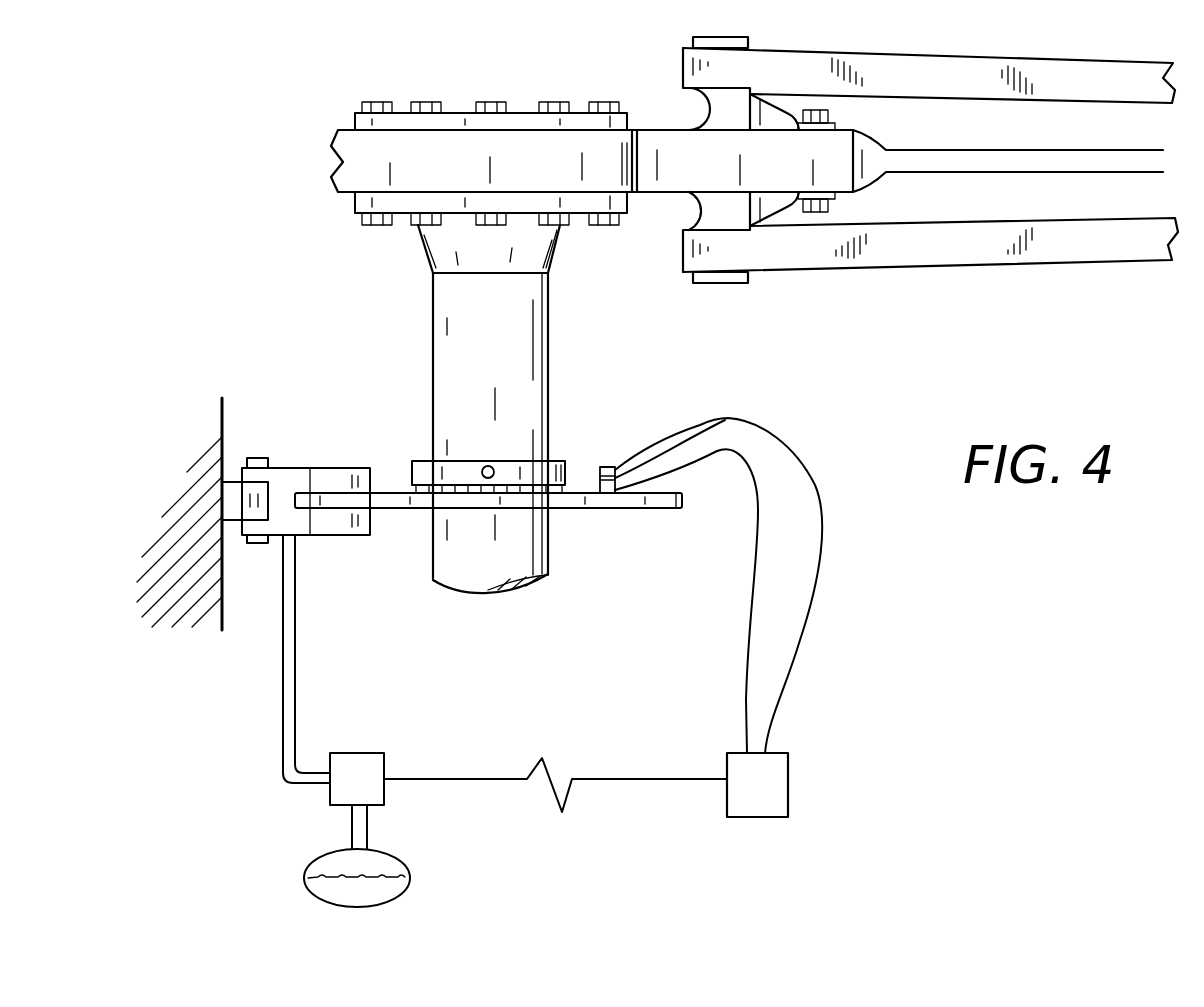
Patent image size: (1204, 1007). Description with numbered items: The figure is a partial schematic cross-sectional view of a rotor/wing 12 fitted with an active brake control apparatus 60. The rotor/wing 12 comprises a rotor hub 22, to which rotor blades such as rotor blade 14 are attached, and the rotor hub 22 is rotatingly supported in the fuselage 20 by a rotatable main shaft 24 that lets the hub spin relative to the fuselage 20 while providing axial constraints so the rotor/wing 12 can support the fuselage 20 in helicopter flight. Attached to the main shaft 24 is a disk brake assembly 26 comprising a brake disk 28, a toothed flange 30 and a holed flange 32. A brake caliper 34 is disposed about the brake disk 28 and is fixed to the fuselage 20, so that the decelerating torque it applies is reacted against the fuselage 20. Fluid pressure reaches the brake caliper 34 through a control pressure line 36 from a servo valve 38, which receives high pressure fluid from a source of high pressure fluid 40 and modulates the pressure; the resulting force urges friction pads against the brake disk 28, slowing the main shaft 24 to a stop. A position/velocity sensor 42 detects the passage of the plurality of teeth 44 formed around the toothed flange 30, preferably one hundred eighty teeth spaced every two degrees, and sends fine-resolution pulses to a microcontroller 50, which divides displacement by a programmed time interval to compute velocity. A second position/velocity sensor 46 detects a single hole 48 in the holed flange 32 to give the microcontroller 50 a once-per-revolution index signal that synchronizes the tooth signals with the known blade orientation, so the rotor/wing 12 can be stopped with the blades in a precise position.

The rotor/wing 12 is at (302, 59).
The rotor blade 14 is at (858, 258).
The fuselage 20 is at (148, 597).
The rotor hub 22 is at (357, 208).
The main shaft 24 is at (452, 348).
The disk brake assembly 26 is at (575, 637).
The brake disk 28 is at (684, 507).
The toothed flange 30 is at (605, 466).
The holed flange 32 is at (566, 478).
The brake caliper 34 is at (303, 465).
The control pressure line 36 is at (293, 657).
The servo valve 38 is at (385, 763).
The source of high pressure fluid 40 is at (412, 877).
The position/velocity sensor 42 is at (706, 423).
The plurality of teeth 44 is at (410, 490).
The second position/velocity sensor 46 is at (620, 468).
The hole 48 is at (490, 465).
The microcontroller 50 is at (788, 779).
The active brake control apparatus 60 is at (972, 728).